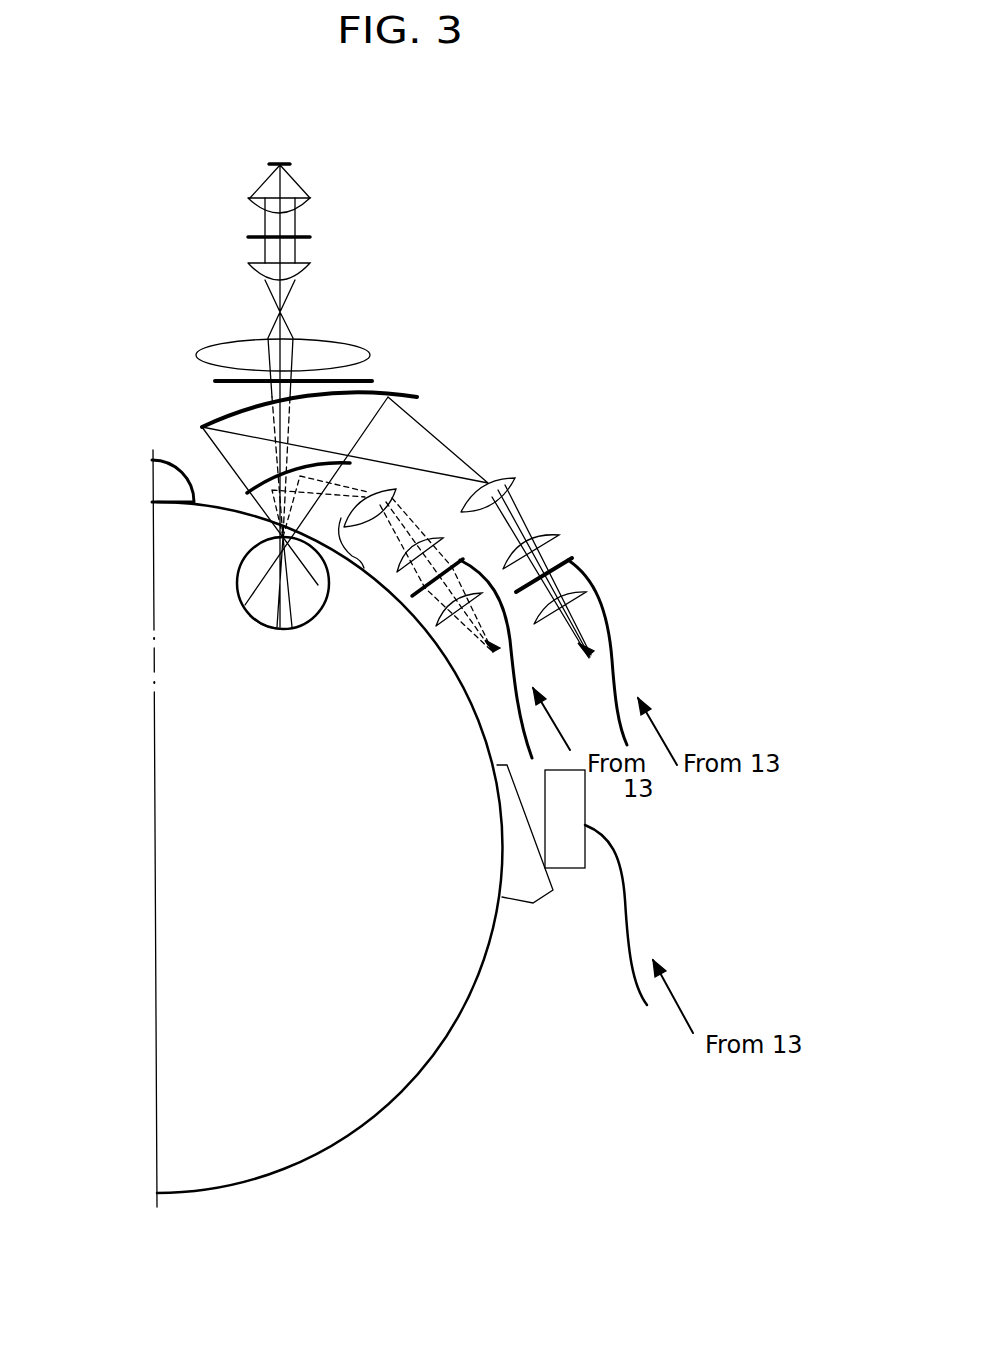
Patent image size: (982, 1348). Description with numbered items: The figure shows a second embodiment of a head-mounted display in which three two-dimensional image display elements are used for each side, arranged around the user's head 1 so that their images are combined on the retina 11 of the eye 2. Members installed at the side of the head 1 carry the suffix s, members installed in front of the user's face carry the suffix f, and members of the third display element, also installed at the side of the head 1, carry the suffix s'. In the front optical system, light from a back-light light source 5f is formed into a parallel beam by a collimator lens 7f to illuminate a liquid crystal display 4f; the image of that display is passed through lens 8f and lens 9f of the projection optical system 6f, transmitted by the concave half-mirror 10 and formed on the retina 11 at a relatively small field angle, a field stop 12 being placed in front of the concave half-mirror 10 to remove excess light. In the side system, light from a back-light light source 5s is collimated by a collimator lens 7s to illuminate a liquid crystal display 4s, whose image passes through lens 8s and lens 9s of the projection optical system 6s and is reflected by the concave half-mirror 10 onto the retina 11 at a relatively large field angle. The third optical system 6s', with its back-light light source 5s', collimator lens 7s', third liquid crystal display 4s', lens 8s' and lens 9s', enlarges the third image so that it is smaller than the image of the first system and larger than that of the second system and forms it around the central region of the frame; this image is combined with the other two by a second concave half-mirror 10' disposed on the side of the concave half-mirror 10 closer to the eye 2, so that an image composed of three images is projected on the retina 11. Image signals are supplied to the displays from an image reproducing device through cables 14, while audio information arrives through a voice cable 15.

The human head 1 is at (427, 1038).
The eye 2 is at (237, 587).
The retina 11 is at (253, 617).
The liquid crystal display 4f is at (312, 237).
The back-light light source 5f is at (287, 162).
The projection optical system 6f is at (142, 243).
The collimator lens 7f is at (310, 198).
The lens 8f is at (250, 265).
The lens 9f is at (200, 352).
The field stop 12 is at (215, 383).
The concave half-mirror 10 is at (339, 388).
The second concave half-mirror 10' is at (324, 475).
The liquid crystal display 4s is at (578, 558).
The back-light light source 5s is at (625, 648).
The projection optical system 6s is at (561, 524).
The collimator lens 7s is at (599, 598).
The lens 8s is at (550, 525).
The lens 9s is at (506, 463).
The third liquid crystal display 4s' is at (463, 570).
The back-light light source 5s' is at (491, 672).
The third optical system 6s' is at (356, 565).
The collimator lens 7s' is at (460, 631).
The lens 8s' is at (445, 547).
The lens 9s' is at (395, 502).
The cables 14 is at (513, 663).
The voice cable 15 is at (627, 910).